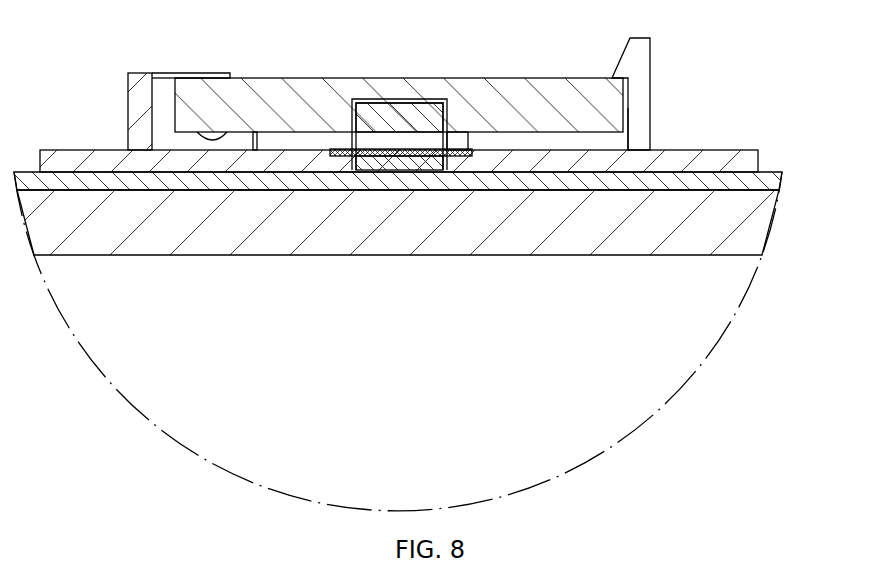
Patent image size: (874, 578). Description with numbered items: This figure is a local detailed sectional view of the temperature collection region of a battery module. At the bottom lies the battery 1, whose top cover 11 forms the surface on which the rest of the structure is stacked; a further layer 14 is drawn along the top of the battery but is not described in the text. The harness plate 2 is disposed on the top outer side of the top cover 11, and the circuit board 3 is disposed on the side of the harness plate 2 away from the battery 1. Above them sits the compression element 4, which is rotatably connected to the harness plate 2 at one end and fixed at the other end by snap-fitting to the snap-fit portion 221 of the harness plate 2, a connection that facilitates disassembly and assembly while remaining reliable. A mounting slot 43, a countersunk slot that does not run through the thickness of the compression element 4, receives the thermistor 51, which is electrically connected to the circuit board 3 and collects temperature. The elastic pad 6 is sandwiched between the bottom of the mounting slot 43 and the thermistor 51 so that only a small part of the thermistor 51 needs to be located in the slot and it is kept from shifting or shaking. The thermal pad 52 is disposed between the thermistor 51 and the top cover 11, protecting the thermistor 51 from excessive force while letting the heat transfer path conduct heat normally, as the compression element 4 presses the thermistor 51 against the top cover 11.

The battery 1 is at (722, 312).
The top cover 11 is at (745, 227).
The circuit layer 14 is at (763, 183).
The harness plate 2 is at (683, 160).
The snap-fit portion 221 is at (635, 67).
The compression element 4 is at (188, 96).
The mounting slot 43 is at (440, 143).
The circuit board 3 is at (340, 150).
The thermistor 51 is at (397, 147).
The thermal pad 52 is at (367, 163).
The elastic pad 6 is at (413, 123).